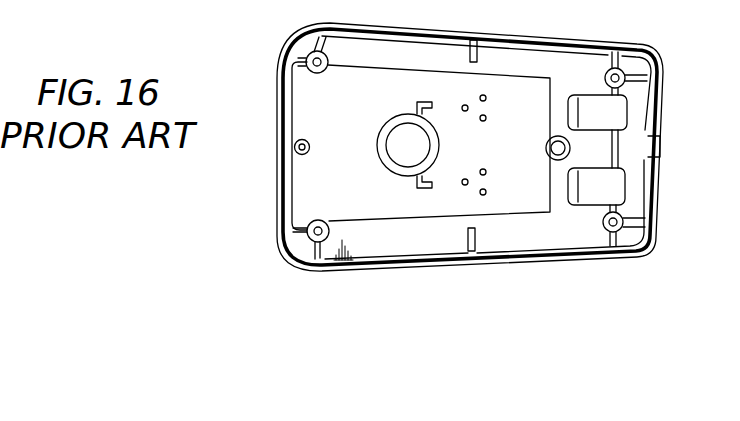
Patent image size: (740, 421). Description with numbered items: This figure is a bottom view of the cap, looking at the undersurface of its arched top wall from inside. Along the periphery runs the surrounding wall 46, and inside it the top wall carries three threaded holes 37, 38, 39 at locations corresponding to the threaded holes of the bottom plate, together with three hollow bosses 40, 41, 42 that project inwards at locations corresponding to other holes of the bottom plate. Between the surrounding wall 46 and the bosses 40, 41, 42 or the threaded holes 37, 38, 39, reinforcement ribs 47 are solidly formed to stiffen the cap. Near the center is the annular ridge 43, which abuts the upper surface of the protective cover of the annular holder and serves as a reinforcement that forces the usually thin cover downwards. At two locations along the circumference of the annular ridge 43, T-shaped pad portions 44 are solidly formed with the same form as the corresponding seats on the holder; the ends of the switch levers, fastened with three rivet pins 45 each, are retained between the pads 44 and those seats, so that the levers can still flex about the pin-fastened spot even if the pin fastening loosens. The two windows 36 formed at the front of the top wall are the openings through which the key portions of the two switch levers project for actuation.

The windows 36 is at (627, 107).
The threaded hole 37 is at (560, 160).
The threaded hole 38 is at (307, 230).
The threaded hole 39 is at (313, 52).
The hollow boss 40 is at (611, 233).
The hollow boss 41 is at (618, 67).
The hollow boss 42 is at (299, 153).
The annular ridge 43 is at (399, 113).
The T-shaped pad portion 44 is at (425, 101).
The rivet pins 45 is at (466, 105).
The surrounding wall 46 is at (578, 42).
The reinforcement ribs 47 is at (322, 43).